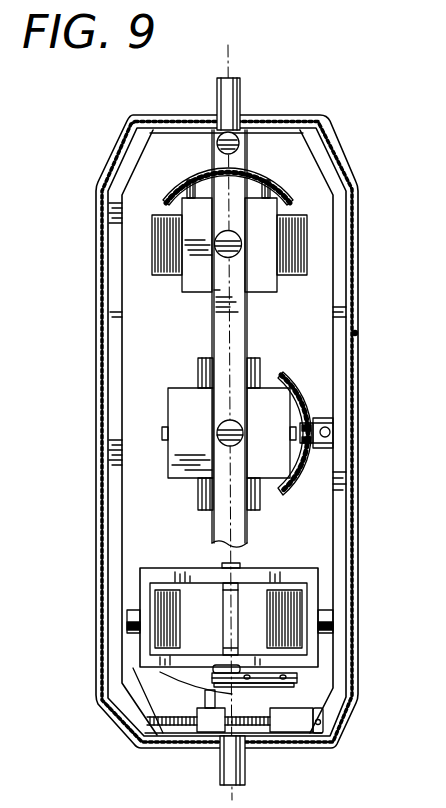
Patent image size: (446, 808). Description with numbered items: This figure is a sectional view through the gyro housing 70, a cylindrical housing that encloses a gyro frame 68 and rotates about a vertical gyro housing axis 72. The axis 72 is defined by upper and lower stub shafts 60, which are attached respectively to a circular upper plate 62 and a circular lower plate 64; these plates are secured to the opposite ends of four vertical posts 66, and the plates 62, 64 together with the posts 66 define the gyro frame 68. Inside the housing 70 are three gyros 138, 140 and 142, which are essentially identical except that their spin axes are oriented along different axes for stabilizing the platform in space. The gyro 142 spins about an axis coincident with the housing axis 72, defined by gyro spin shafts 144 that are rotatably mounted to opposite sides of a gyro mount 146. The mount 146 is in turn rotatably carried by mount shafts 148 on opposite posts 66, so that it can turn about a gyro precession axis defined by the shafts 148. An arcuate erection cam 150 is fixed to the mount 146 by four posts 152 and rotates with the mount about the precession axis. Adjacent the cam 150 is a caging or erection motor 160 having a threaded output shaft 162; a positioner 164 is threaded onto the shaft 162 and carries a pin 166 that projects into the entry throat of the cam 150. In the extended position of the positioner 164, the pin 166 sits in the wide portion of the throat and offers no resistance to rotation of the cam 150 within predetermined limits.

The stub shaft 60 is at (241, 88).
The upper plate 62 is at (192, 117).
The lower plate 64 is at (192, 733).
The vertical post 66 is at (135, 157).
The gyro frame 68 is at (355, 333).
The gyro housing 70 is at (180, 346).
The gyro housing axis 72 is at (235, 66).
The gyro 138 is at (170, 273).
The gyro 140 is at (200, 497).
The gyro 142 is at (280, 598).
The gyro spin shaft 144 is at (240, 563).
The gyro mount 146 is at (143, 577).
The mount shaft 148 is at (237, 253).
The arcuate erection cam 150 is at (287, 192).
The post 152 is at (305, 408).
The erection motor 160 is at (310, 722).
The threaded output shaft 162 is at (162, 733).
The positioner 164 is at (330, 440).
The pin 166 is at (205, 697).